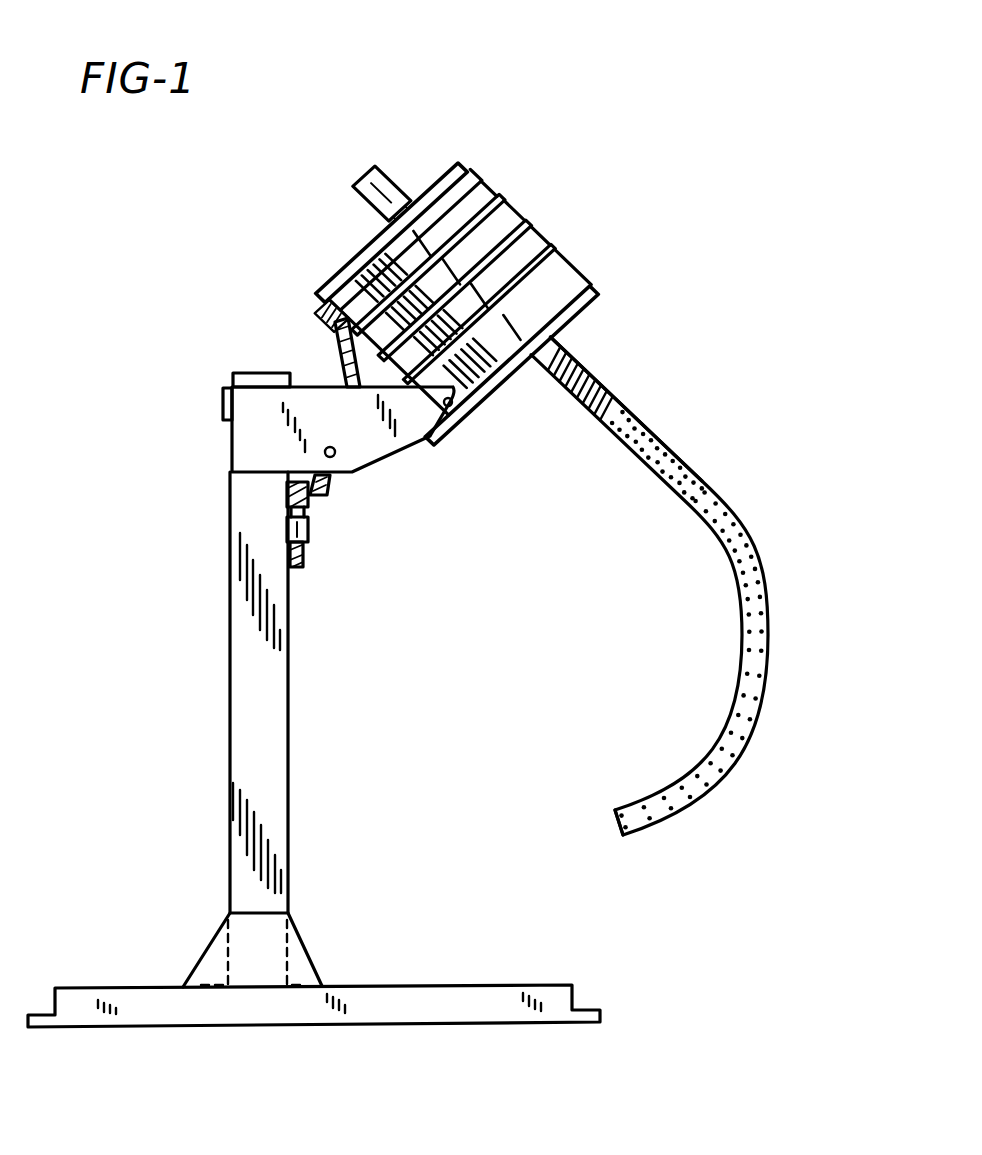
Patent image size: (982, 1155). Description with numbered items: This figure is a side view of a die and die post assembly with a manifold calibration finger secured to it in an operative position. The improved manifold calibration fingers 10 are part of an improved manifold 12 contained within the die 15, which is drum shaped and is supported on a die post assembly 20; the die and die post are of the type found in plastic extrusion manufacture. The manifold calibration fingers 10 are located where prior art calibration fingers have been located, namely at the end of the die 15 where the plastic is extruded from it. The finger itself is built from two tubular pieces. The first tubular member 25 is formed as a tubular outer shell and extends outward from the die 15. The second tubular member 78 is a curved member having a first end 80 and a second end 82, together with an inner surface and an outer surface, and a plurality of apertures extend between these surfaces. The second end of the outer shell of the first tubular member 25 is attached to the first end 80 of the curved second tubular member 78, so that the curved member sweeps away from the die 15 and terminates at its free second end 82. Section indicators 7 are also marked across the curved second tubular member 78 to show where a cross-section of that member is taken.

The manifold calibration fingers 10 is at (653, 413).
The manifold 12 is at (388, 180).
The die 15 is at (575, 263).
The die post assembly 20 is at (227, 744).
The first tubular member 25 is at (587, 365).
The second tubular member 78 is at (701, 623).
The first end 80 is at (612, 450).
The second end 82 is at (610, 820).
The section line 7 is at (652, 778).